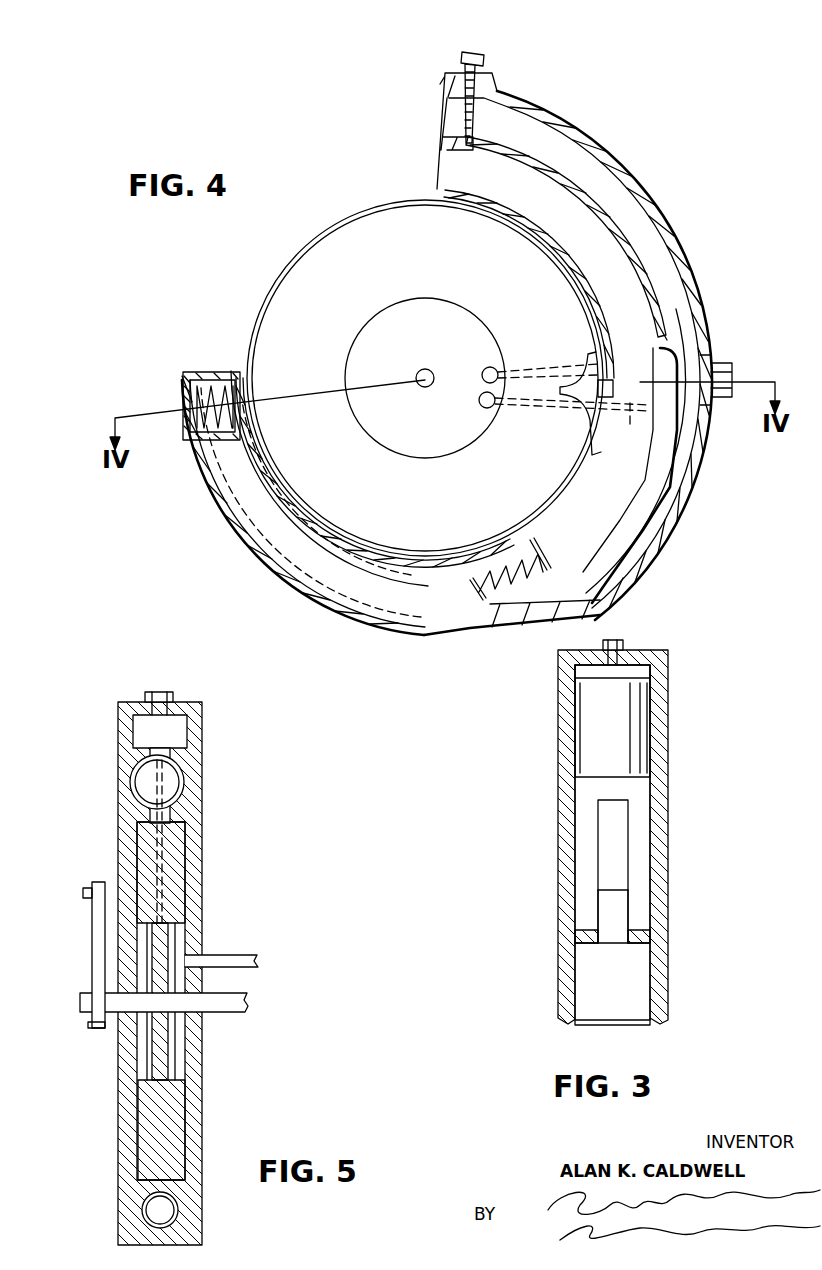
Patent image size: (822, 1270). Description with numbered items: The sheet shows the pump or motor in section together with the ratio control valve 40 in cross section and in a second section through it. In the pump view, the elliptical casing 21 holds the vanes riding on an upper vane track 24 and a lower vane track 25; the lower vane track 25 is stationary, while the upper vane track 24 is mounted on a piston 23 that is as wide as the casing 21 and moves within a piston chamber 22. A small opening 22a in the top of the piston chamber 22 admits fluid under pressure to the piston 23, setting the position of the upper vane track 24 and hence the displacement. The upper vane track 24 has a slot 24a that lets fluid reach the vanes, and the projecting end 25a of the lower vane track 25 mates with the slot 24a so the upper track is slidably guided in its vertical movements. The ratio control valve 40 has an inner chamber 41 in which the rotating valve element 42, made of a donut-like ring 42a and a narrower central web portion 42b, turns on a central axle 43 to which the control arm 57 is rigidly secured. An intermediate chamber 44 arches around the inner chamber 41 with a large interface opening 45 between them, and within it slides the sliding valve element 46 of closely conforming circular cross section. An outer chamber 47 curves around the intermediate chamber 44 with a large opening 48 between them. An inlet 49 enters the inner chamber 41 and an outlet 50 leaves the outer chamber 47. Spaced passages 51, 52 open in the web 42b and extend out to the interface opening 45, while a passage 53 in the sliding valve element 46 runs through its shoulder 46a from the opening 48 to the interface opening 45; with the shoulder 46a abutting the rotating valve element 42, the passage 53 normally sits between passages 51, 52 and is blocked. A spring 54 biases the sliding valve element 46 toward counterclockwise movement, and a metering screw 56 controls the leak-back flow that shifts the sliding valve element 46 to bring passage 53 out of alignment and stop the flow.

In FIG. 3, the casing 21 is at (568, 941).
In FIG. 3, the piston chamber 22 is at (567, 707).
In FIG. 3, the small opening 22a is at (628, 644).
In FIG. 3, the piston 23 is at (630, 715).
In FIG. 3, the upper vane track 24 is at (640, 817).
In FIG. 3, the slot 24a is at (613, 840).
In FIG. 3, the lower vane track 25 is at (627, 975).
In FIG. 3, the projecting end 25a is at (615, 915).
In FIG. 4, the ratio control valve 40 is at (670, 197).
In FIG. 5, the ratio control valve 40 is at (207, 905).
In FIG. 4, the inner chamber 41 is at (297, 263).
In FIG. 4, the rotating valve element 42 is at (446, 255).
In FIG. 4, the donut-like ring 42a is at (450, 518).
In FIG. 5, the donut-like ring 42a is at (178, 1110).
In FIG. 4, the central web portion 42b is at (448, 433).
In FIG. 5, the central web portion 42b is at (160, 1044).
In FIG. 4, the central axle 43 is at (428, 374).
In FIG. 5, the central axle 43 is at (236, 1002).
In FIG. 4, the intermediate chamber 44 is at (510, 212).
In FIG. 4, the interface opening 45 is at (573, 389).
In FIG. 4, the sliding valve element 46 is at (569, 225).
In FIG. 5, the sliding valve element 46 is at (172, 775).
In FIG. 4, the shoulder 46a is at (609, 393).
In FIG. 5, the shoulder 46a is at (168, 816).
In FIG. 4, the outer chamber 47 is at (680, 291).
In FIG. 5, the outer chamber 47 is at (176, 730).
In FIG. 4, the opening 48 is at (690, 430).
In FIG. 5, the inlet 49 is at (230, 960).
In FIG. 4, the outlet 50 is at (729, 372).
In FIG. 5, the outlet 50 is at (168, 688).
In FIG. 4, the passage 51 is at (493, 367).
In FIG. 4, the passage 52 is at (490, 408).
In FIG. 5, the passage 52 is at (166, 857).
In FIG. 4, the passage 53 is at (626, 424).
In FIG. 5, the passage 53 is at (168, 790).
In FIG. 4, the spring 54 is at (480, 600).
In FIG. 5, the spring 54 is at (162, 1210).
In FIG. 4, the metering screw 56 is at (485, 57).
In FIG. 5, the control arm 57 is at (96, 932).